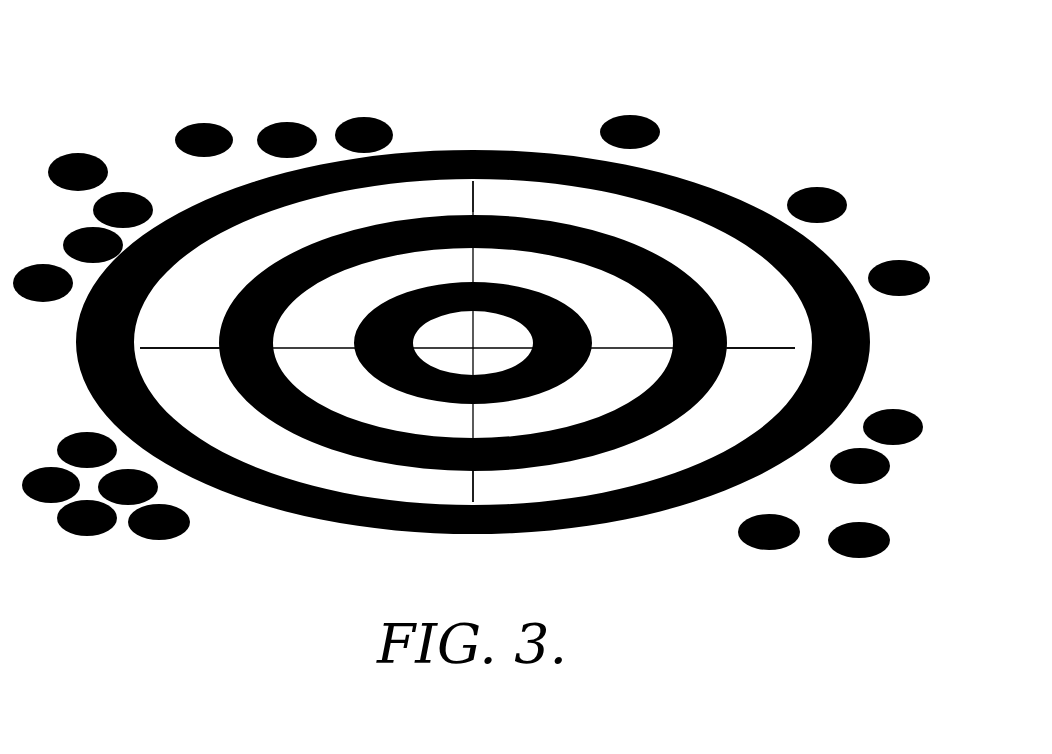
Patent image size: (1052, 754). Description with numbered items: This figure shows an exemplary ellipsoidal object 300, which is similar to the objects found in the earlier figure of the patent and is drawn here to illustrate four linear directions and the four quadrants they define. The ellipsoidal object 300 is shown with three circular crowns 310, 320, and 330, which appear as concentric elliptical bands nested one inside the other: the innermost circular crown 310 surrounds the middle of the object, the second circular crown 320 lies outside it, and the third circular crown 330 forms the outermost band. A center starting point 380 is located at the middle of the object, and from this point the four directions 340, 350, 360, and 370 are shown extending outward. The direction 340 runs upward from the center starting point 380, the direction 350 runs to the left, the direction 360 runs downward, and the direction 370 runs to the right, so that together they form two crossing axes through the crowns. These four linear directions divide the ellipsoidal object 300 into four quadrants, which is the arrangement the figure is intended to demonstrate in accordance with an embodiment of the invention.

The ellipsoidal object 300 is at (652, 66).
The circular crown 310 is at (565, 307).
The circular crown 320 is at (676, 270).
The circular crown 330 is at (687, 181).
The direction 340 is at (479, 195).
The direction 350 is at (185, 347).
The direction 360 is at (477, 487).
The direction 370 is at (767, 347).
The center starting point 380 is at (473, 349).